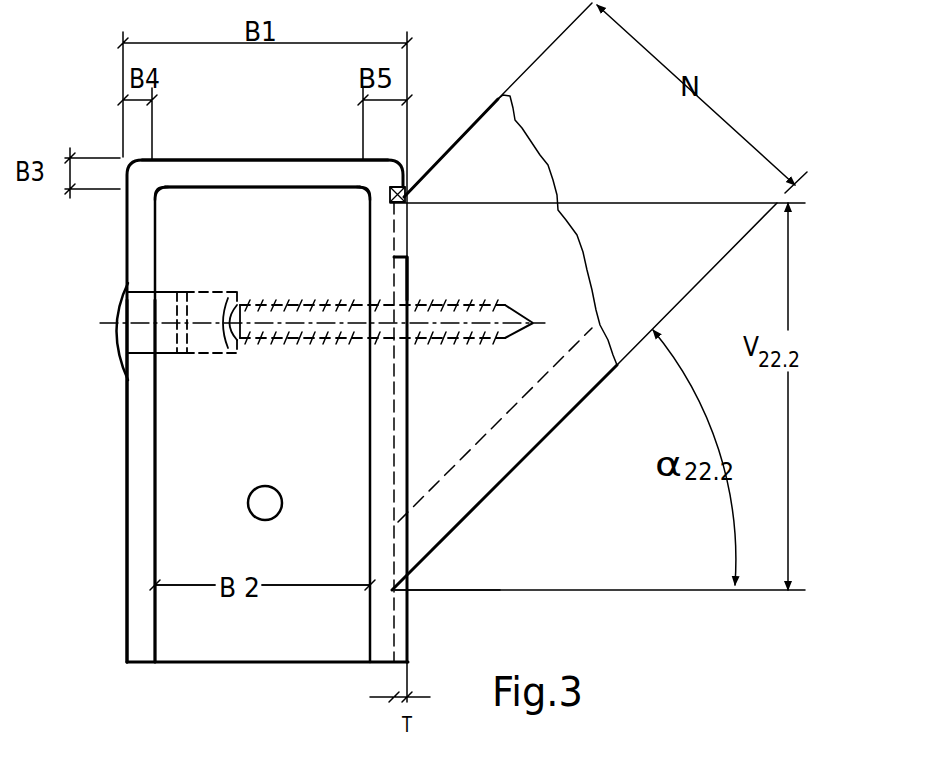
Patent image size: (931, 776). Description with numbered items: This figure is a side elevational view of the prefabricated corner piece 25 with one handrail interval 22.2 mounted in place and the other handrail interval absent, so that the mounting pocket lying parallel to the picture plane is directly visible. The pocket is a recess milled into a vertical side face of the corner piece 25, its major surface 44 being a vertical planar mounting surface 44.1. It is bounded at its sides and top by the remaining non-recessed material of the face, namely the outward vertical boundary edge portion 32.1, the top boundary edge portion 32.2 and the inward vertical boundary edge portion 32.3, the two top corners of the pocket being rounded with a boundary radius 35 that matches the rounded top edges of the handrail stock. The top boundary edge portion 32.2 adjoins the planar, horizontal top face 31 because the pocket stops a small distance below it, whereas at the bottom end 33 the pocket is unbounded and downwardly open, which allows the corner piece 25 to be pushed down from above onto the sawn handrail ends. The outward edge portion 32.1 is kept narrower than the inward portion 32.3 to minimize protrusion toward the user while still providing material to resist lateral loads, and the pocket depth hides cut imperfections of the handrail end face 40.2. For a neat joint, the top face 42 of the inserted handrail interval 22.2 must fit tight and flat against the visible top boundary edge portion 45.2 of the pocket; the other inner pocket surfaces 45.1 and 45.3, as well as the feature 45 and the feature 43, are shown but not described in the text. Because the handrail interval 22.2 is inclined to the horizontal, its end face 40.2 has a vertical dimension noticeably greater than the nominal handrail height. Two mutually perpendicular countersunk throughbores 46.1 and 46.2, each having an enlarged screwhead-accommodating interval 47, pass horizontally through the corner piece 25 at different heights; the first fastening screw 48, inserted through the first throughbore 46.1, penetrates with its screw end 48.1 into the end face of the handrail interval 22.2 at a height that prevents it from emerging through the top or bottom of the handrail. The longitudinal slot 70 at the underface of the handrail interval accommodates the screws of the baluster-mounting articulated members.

The handrail interval 22.2 is at (485, 385).
The corner piece 25 is at (122, 383).
The top face 31 is at (231, 156).
The outward vertical boundary edge portion 32.1 is at (142, 476).
The top boundary edge portion 32.2 is at (262, 182).
The inward vertical boundary edge portion 32.3 is at (385, 640).
The bottom end 33 is at (258, 668).
The boundary radius 35 is at (157, 190).
The end face 40.2 is at (393, 458).
The top face 42 is at (472, 118).
The bent edge 43 is at (431, 184).
The major surface 44 is at (262, 615).
The vertical planar mounting surface 44.1 is at (400, 600).
The bead 45 is at (410, 186).
The inner left surface 45.1 is at (157, 403).
The visible top boundary edge portion 45.2 is at (227, 190).
The inner right surface 45.3 is at (367, 392).
The first countersunk throughbore 46.1 is at (253, 338).
The second countersunk throughbore 46.2 is at (257, 513).
The screwhead-accommodating interval 47 is at (200, 350).
The first fastening screw 48 is at (460, 305).
The screw end 48.1 is at (533, 300).
The longitudinal slot 70 is at (562, 412).